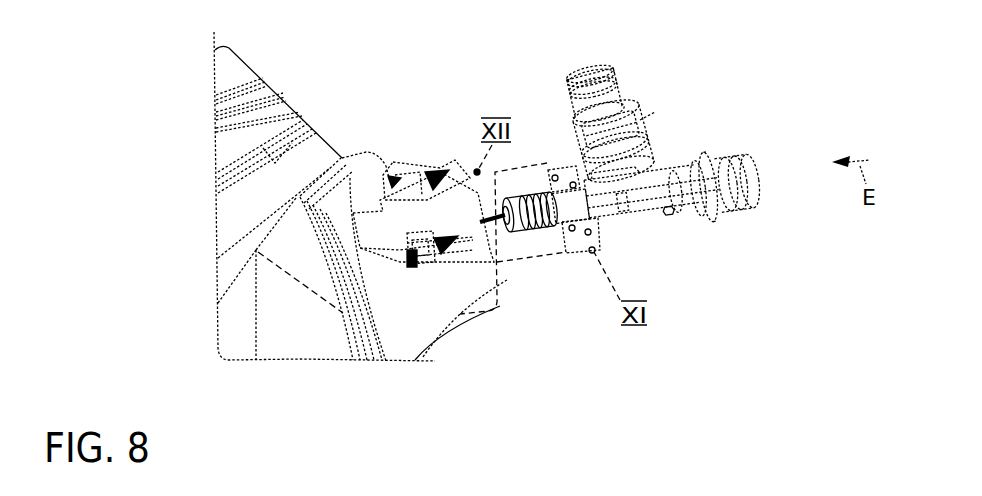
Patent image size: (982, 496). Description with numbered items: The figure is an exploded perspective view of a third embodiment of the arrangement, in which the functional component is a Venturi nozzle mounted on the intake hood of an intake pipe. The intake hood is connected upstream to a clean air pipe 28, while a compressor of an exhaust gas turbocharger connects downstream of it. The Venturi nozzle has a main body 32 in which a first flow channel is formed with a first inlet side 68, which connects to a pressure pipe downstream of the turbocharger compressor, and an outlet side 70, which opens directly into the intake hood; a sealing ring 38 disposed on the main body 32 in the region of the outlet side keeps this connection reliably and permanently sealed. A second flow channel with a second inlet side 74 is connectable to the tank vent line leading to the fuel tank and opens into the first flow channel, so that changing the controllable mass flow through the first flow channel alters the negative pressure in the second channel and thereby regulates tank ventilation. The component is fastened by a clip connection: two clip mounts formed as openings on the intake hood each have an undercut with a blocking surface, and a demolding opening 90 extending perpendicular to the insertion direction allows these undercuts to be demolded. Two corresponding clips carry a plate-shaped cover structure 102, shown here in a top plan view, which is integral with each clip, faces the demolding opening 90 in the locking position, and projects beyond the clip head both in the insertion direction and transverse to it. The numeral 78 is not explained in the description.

The clean air pipe 28 is at (233, 61).
The main body 32 is at (621, 106).
The sealing ring 38 is at (543, 230).
The first inlet side 68 is at (757, 172).
The outlet side 70 is at (500, 305).
The second inlet side 74 is at (592, 64).
The gear housing 78 is at (460, 364).
The demolding opening 90 is at (390, 182).
The cover structure 102 is at (553, 175).